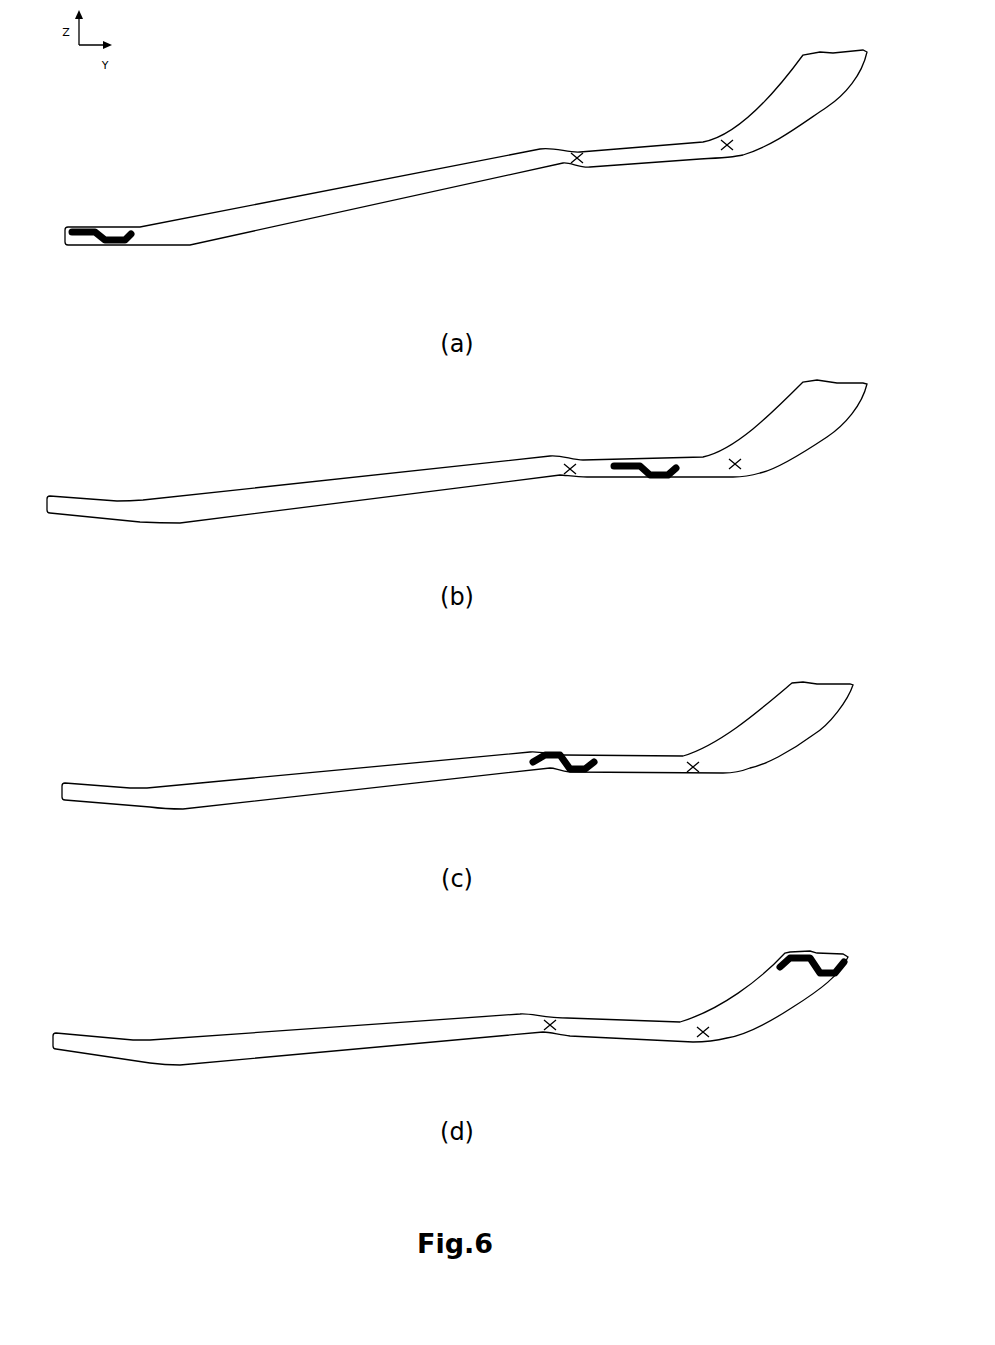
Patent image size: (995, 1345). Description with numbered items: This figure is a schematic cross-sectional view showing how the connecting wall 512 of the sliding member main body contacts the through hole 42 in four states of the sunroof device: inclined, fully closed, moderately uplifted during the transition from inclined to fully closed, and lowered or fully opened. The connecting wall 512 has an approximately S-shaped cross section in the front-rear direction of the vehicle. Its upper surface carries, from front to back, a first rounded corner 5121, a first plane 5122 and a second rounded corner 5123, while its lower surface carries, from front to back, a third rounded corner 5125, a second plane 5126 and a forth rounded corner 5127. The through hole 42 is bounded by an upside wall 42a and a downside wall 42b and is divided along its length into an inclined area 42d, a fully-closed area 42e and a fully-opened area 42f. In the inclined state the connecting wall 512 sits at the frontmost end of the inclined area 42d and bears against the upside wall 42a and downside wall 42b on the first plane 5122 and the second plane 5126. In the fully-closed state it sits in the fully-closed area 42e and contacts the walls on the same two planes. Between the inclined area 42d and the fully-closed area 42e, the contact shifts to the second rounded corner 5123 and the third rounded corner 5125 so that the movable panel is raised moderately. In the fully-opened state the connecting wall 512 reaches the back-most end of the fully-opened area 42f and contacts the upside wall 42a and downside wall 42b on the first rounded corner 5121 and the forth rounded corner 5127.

The through hole 42 is at (333, 185).
The upside wall 42a is at (107, 226).
The downside wall 42b is at (133, 246).
The inclined area 42d is at (270, 207).
The fully-closed area 42e is at (688, 469).
The fully-opened area 42f is at (735, 1025).
The connecting wall 512 is at (82, 246).
The first rounded corner 5121 is at (782, 960).
The first plane 5122 is at (88, 226).
The second rounded corner 5123 is at (560, 759).
The third rounded corner 5125 is at (560, 768).
The second plane 5126 is at (118, 246).
The forth rounded corner 5127 is at (840, 973).